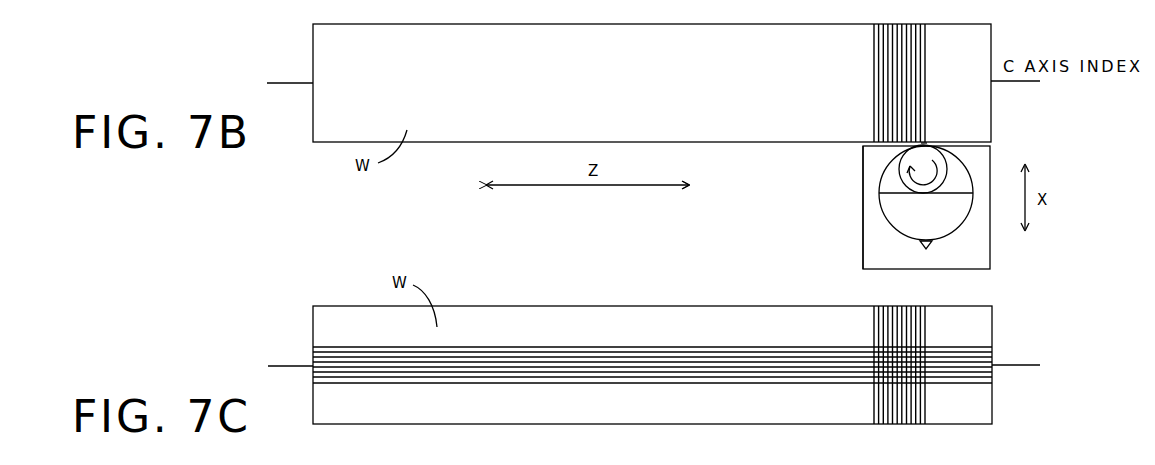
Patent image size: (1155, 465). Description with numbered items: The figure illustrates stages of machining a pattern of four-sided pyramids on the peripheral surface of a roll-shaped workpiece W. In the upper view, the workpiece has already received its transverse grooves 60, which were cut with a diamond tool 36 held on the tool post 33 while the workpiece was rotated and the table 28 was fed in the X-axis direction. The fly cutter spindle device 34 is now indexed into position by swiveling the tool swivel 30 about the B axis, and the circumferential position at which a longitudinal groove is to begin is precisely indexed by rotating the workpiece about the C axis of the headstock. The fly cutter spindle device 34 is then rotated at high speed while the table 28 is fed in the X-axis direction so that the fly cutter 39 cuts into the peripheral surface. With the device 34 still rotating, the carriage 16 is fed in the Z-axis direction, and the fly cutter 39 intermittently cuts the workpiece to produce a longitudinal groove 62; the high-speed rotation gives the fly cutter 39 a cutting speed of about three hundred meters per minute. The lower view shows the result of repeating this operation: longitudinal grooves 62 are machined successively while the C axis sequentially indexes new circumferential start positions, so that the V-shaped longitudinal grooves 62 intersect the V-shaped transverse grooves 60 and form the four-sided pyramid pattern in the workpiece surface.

In FIG. 7B, the carriage 16 is at (853, 243).
In FIG. 7B, the table 28 is at (868, 161).
In FIG. 7B, the tool swivel 30 is at (890, 183).
In FIG. 7B, the tool post 33 is at (913, 220).
In FIG. 7B, the fly cutter spindle device 34 is at (953, 170).
In FIG. 7B, the diamond tool 36 is at (931, 247).
In FIG. 7B, the fly cutter 39 is at (926, 143).
In FIG. 7B, the transverse grooves 60 is at (928, 49).
In FIG. 7C, the transverse grooves 60 is at (928, 333).
In FIG. 7C, the longitudinal grooves 62 is at (695, 345).